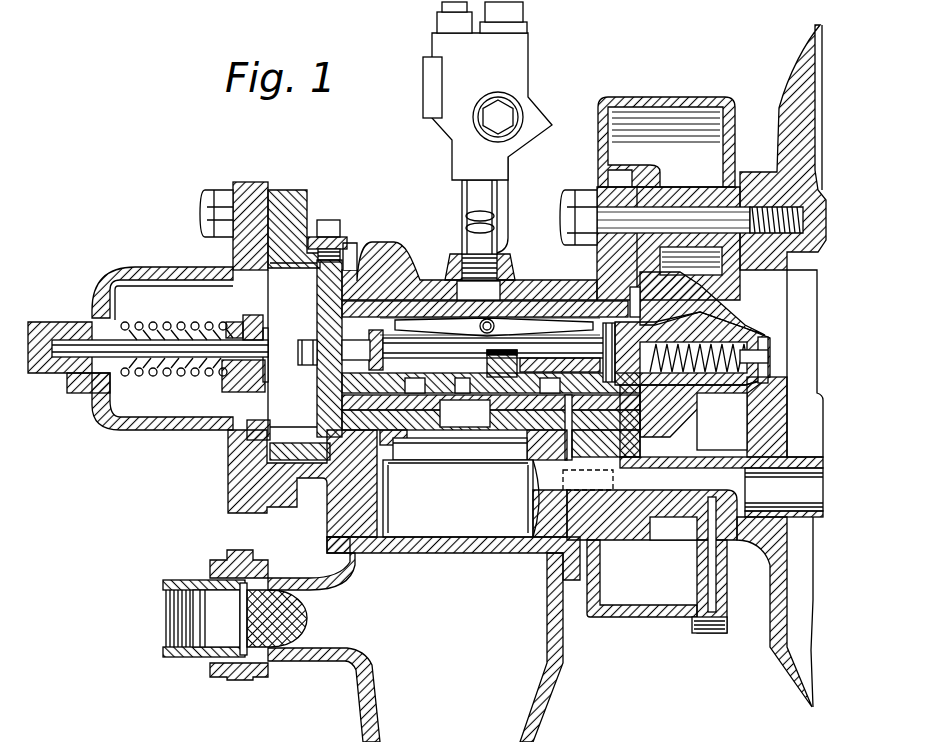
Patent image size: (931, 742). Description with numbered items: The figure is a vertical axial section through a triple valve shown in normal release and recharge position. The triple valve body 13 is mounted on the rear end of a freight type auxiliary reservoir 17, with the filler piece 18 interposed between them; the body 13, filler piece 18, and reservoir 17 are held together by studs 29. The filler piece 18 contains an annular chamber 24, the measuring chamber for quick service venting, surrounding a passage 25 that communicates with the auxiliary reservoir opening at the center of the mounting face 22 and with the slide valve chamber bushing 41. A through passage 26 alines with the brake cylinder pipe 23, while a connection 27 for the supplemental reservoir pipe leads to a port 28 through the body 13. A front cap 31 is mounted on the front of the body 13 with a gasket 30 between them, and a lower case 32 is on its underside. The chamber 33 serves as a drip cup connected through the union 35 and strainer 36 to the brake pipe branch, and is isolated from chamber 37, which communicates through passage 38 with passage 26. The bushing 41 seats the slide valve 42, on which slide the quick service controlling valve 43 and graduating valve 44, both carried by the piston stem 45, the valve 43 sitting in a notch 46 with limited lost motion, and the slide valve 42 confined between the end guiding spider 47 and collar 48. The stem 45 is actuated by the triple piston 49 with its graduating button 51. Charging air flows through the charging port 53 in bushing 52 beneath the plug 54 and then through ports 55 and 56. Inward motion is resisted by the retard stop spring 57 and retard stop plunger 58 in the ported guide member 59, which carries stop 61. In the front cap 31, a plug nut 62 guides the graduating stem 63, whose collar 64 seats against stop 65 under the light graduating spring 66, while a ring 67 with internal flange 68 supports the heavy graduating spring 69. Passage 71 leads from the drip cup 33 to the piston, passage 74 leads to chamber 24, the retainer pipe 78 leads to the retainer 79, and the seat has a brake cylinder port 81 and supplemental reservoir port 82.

The triple valve body 13 is at (408, 268).
The auxiliary reservoir 17 is at (790, 660).
The filler piece 18 is at (646, 617).
The mounting face 22 is at (806, 420).
The brake cylinder pipe 23 is at (721, 487).
The annular chamber 24 is at (710, 140).
The passage 25 is at (718, 437).
The through passage 26 is at (676, 505).
The connection 27 is at (706, 633).
The port 28 is at (718, 580).
The studs 29 is at (672, 212).
The gasket 30 is at (245, 268).
The front cap 31 is at (137, 268).
The lower case 32 is at (556, 677).
The chamber 33 is at (358, 586).
The union 35 is at (258, 678).
The strainer 36 is at (309, 618).
The chamber 37 is at (458, 498).
The passage 38 is at (532, 500).
The slide valve chamber bushing 41 is at (515, 282).
The slide valve 42 is at (380, 385).
The quick service controlling valve 43 is at (558, 359).
The graduating valve 44 is at (490, 356).
The piston stem 45 is at (399, 336).
The notch 46 is at (452, 443).
The end guiding spider 47 is at (594, 276).
The collar 48 is at (372, 350).
The triple piston 49 is at (317, 295).
The graduating button 51 is at (306, 366).
The bushing 52 is at (272, 232).
The charging port 53 is at (312, 237).
The plug 54 is at (330, 222).
The port 55 is at (331, 250).
The port 56 is at (352, 262).
The retard stop spring 57 is at (740, 332).
The retard stop plunger 58 is at (768, 355).
The ported guide member 59 is at (700, 306).
The stop 61 is at (607, 342).
The plug nut 62 is at (56, 320).
The graduating stem 63 is at (82, 380).
The collar 64 is at (252, 318).
The stop 65 is at (268, 390).
The light graduating spring 66 is at (165, 377).
The ring 67 is at (228, 324).
The internal flange 68 is at (250, 388).
The heavy graduating spring 69 is at (170, 324).
The passage 71 is at (357, 555).
The passage 74 is at (588, 483).
The retainer pipe 78 is at (480, 192).
The retainer 79 is at (512, 56).
The brake cylinder port 81 is at (480, 440).
The supplemental reservoir port 82 is at (515, 498).